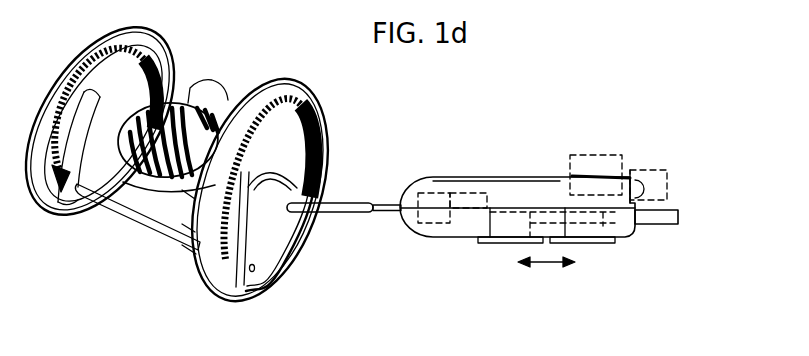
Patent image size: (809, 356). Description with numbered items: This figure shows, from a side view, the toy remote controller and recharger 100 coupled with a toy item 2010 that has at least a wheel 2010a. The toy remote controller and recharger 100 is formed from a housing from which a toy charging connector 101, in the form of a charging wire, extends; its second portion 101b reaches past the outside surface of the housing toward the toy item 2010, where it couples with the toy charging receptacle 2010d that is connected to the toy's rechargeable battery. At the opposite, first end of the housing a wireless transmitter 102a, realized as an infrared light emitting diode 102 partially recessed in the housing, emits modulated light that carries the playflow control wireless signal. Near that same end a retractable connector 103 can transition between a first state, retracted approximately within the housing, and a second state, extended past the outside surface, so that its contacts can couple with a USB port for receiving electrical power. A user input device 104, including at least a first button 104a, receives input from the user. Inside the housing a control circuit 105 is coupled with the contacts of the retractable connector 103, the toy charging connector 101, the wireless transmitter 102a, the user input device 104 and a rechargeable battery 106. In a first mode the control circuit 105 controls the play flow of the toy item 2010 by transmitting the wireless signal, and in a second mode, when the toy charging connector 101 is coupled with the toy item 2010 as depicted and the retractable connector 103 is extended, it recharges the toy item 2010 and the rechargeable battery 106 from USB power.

The toy remote controller and recharger (TRCR) 100 is at (538, 140).
The toy charging connector 101 is at (373, 215).
The second portion of the toy charging connector 101b is at (355, 203).
The infrared light emitting diode (IRLED) 102 is at (666, 172).
The wireless transmitter 102a is at (670, 196).
The retractable connector 103 is at (498, 242).
The user input device 104 is at (602, 155).
The first button 104a is at (605, 175).
The control circuit 105 is at (483, 195).
The rechargeable battery 106 is at (430, 193).
The toy item 2010 is at (154, 237).
The wheel 2010a is at (246, 292).
The toy charging receptacle 2010d is at (296, 242).